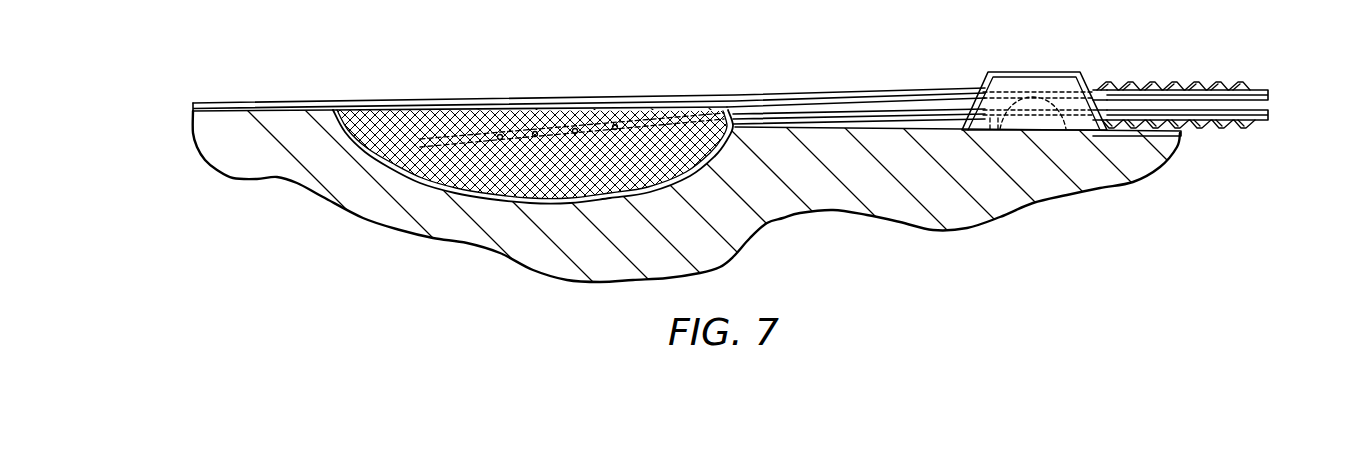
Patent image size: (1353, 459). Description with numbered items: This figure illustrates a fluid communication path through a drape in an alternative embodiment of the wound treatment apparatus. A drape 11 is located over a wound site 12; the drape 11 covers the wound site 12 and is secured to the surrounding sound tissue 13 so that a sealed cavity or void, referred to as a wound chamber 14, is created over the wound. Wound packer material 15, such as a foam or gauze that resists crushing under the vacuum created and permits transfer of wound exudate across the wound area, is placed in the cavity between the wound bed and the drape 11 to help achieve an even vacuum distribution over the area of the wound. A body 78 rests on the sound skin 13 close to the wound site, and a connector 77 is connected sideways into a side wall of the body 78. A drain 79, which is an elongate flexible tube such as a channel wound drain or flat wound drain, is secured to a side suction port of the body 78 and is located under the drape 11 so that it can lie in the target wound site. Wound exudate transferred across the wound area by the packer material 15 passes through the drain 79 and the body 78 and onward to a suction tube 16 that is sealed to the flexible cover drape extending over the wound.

The drape 11 is at (258, 103).
The wound site 12 is at (530, 227).
The sound tissue 13 is at (222, 152).
The wound chamber 14 is at (735, 130).
The wound packer material 15 is at (390, 140).
The suction tube 16 is at (1257, 90).
The connector 77 is at (1097, 90).
The body 78 is at (1033, 83).
The drain 79 is at (833, 98).